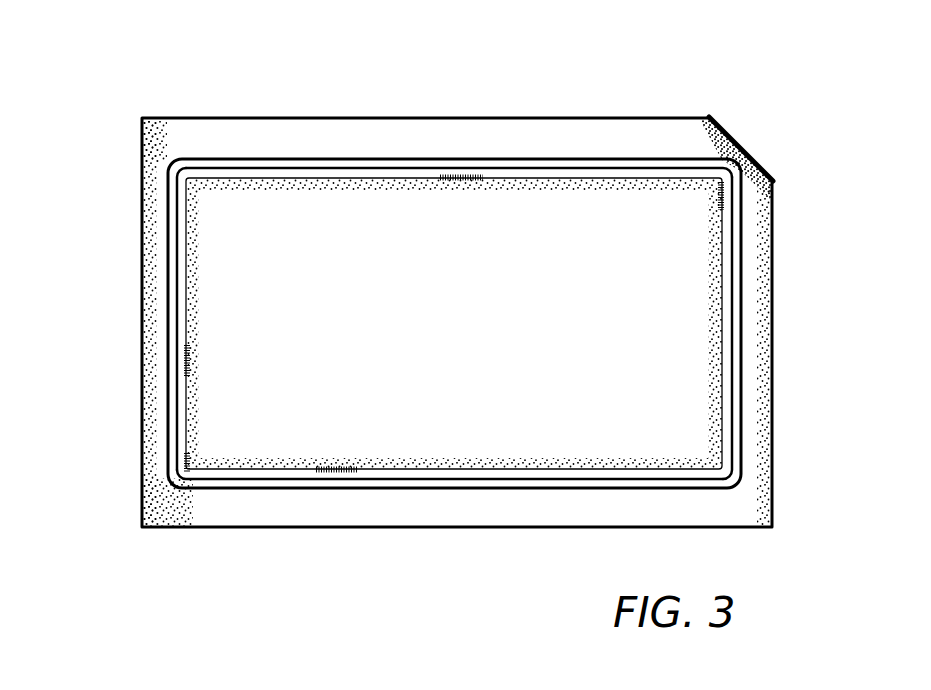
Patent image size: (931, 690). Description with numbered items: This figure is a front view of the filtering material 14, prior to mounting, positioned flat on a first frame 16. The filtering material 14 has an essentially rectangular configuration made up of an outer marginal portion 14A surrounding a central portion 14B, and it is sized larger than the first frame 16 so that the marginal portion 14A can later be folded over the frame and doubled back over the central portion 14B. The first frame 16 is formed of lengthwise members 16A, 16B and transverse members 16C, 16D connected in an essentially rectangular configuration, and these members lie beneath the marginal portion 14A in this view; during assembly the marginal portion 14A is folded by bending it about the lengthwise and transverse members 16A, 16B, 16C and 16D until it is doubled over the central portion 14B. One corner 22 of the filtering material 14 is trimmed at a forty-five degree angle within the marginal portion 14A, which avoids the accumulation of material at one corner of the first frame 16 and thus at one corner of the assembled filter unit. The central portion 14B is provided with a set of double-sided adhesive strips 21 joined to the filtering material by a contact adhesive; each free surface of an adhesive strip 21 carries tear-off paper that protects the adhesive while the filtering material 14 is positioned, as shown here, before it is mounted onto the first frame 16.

The filtering material 14 is at (773, 413).
The outer marginal portion 14A is at (408, 135).
The central portion 14B is at (687, 377).
The first frame 16 is at (503, 150).
The lengthwise member 16A is at (321, 163).
The lengthwise member 16B is at (393, 483).
The transverse member 16C is at (730, 300).
The transverse member 16D is at (173, 300).
The adhesive strip 21 is at (645, 168).
The corner 22 is at (743, 150).